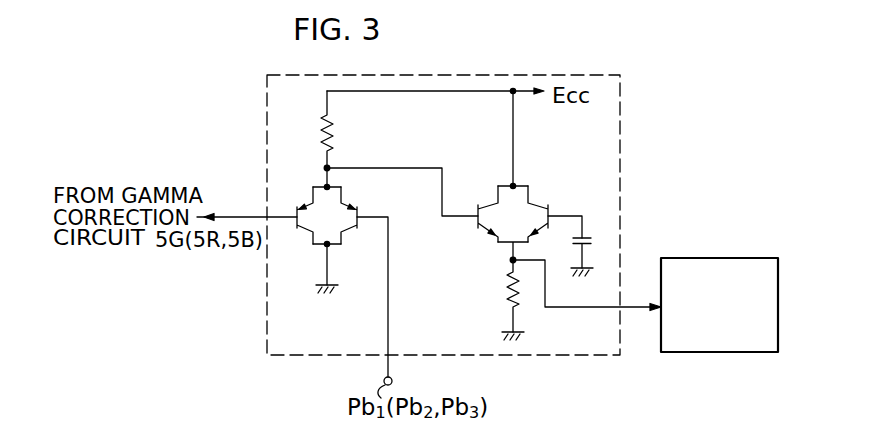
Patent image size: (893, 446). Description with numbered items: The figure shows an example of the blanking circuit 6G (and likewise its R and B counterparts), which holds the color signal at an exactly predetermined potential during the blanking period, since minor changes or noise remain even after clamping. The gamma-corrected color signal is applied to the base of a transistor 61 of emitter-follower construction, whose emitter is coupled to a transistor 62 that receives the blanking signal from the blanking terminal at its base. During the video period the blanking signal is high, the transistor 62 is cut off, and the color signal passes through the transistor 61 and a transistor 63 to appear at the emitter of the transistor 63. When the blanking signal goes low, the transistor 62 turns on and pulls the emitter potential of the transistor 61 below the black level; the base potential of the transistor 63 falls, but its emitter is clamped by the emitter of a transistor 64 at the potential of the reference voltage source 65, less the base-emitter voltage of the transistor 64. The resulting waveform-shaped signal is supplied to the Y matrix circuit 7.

The transistor 61 is at (316, 220).
The transistor 62 is at (340, 210).
The transistor 63 is at (498, 229).
The transistor 64 is at (523, 207).
The reference voltage source 65 is at (588, 242).
The Y matrix circuit 7 is at (727, 258).
The blanking circuit 6G is at (467, 357).